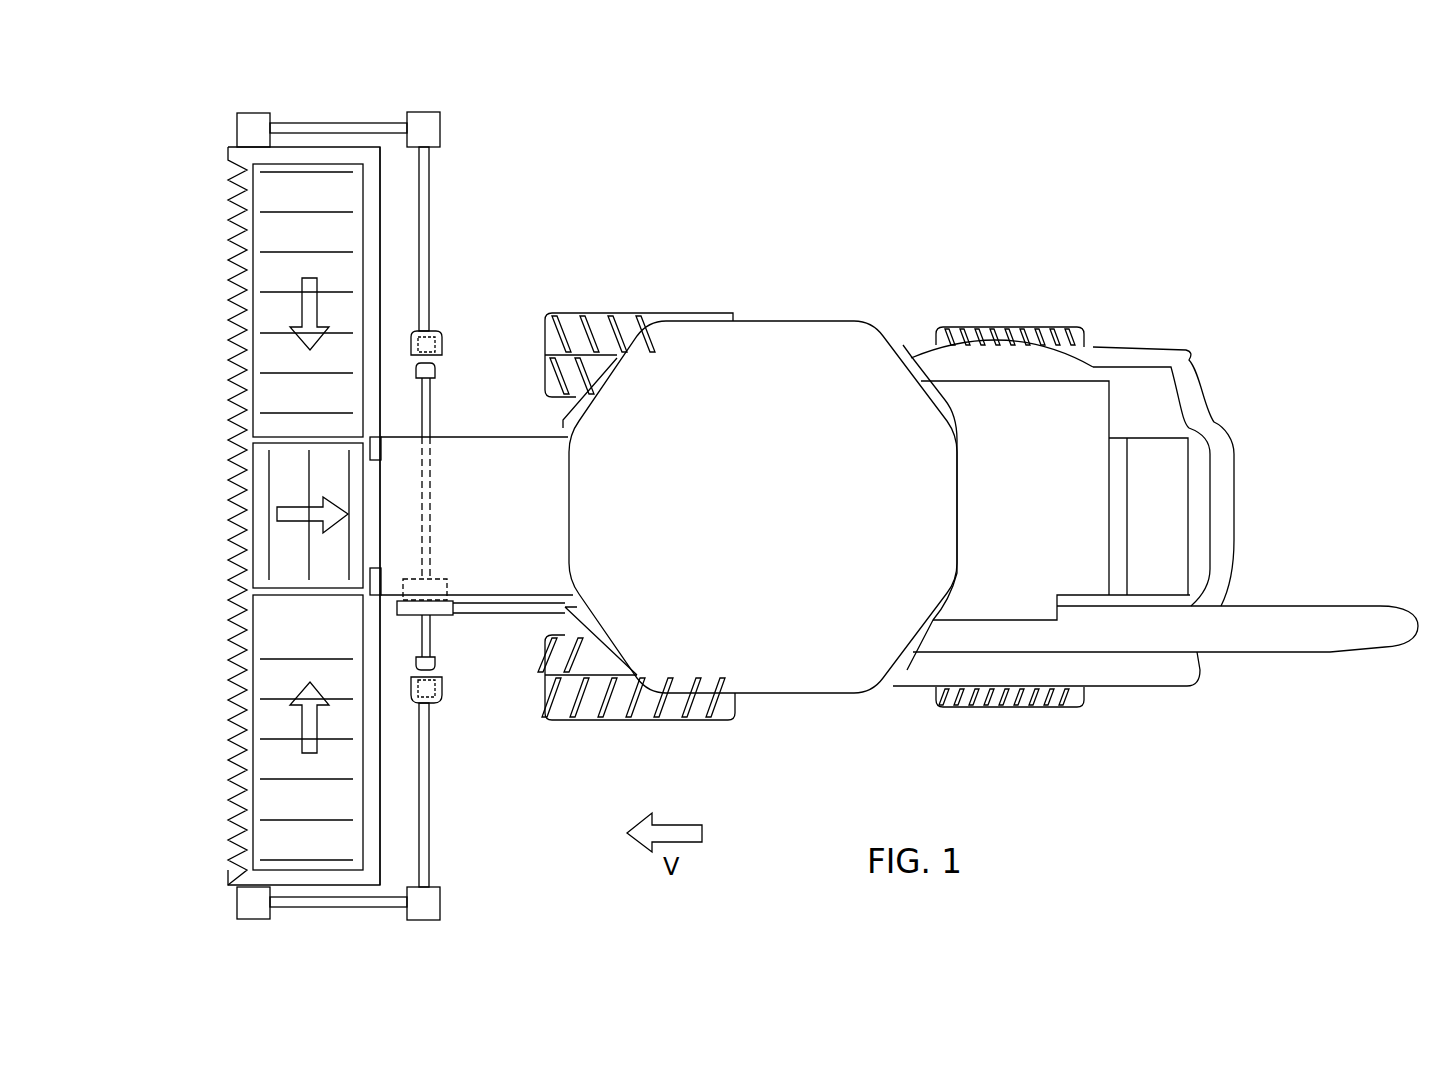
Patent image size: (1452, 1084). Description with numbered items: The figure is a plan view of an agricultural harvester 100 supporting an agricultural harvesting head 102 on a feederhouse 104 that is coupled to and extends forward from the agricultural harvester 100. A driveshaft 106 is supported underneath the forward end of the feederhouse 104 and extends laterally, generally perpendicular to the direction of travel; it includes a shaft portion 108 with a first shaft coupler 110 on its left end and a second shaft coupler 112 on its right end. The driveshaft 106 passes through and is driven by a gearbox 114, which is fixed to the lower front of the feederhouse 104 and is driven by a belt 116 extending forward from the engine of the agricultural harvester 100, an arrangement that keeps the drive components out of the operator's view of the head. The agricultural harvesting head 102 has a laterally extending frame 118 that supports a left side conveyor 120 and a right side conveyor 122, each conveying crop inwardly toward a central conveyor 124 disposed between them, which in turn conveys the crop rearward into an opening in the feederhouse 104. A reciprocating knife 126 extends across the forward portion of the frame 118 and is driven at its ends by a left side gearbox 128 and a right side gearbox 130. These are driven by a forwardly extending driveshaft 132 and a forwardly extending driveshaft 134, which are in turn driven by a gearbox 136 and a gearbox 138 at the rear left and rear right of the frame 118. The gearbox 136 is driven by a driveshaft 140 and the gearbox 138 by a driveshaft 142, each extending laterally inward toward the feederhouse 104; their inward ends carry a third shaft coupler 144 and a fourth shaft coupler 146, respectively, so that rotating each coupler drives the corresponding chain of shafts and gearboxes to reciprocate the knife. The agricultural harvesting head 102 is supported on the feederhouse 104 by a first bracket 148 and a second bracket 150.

The agricultural harvester 100 is at (804, 214).
The agricultural harvesting head 102 is at (331, 106).
The feederhouse 104 is at (511, 404).
The driveshaft 106 is at (430, 510).
The shaft portion 108 is at (426, 508).
The first shaft coupler 110 is at (435, 662).
The second shaft coupler 112 is at (435, 372).
The gearbox 114 is at (440, 572).
The belt 116 is at (493, 613).
The frame 118 is at (382, 747).
The left side conveyor 120 is at (273, 760).
The right side conveyor 122 is at (280, 228).
The central conveyor 124 is at (287, 471).
The reciprocating knife 126 is at (245, 584).
The left side gearbox 128 is at (237, 907).
The right side gearbox 130 is at (237, 130).
The forwardly extending driveshaft 132 is at (373, 907).
The forwardly extending driveshaft 134 is at (363, 123).
The gearbox 136 is at (440, 912).
The gearbox 138 is at (440, 122).
The driveshaft 140 is at (429, 827).
The driveshaft 142 is at (429, 215).
The third shaft coupler 144 is at (443, 705).
The fourth shaft coupler 146 is at (440, 333).
The first bracket 148 is at (370, 580).
The second bracket 150 is at (370, 447).